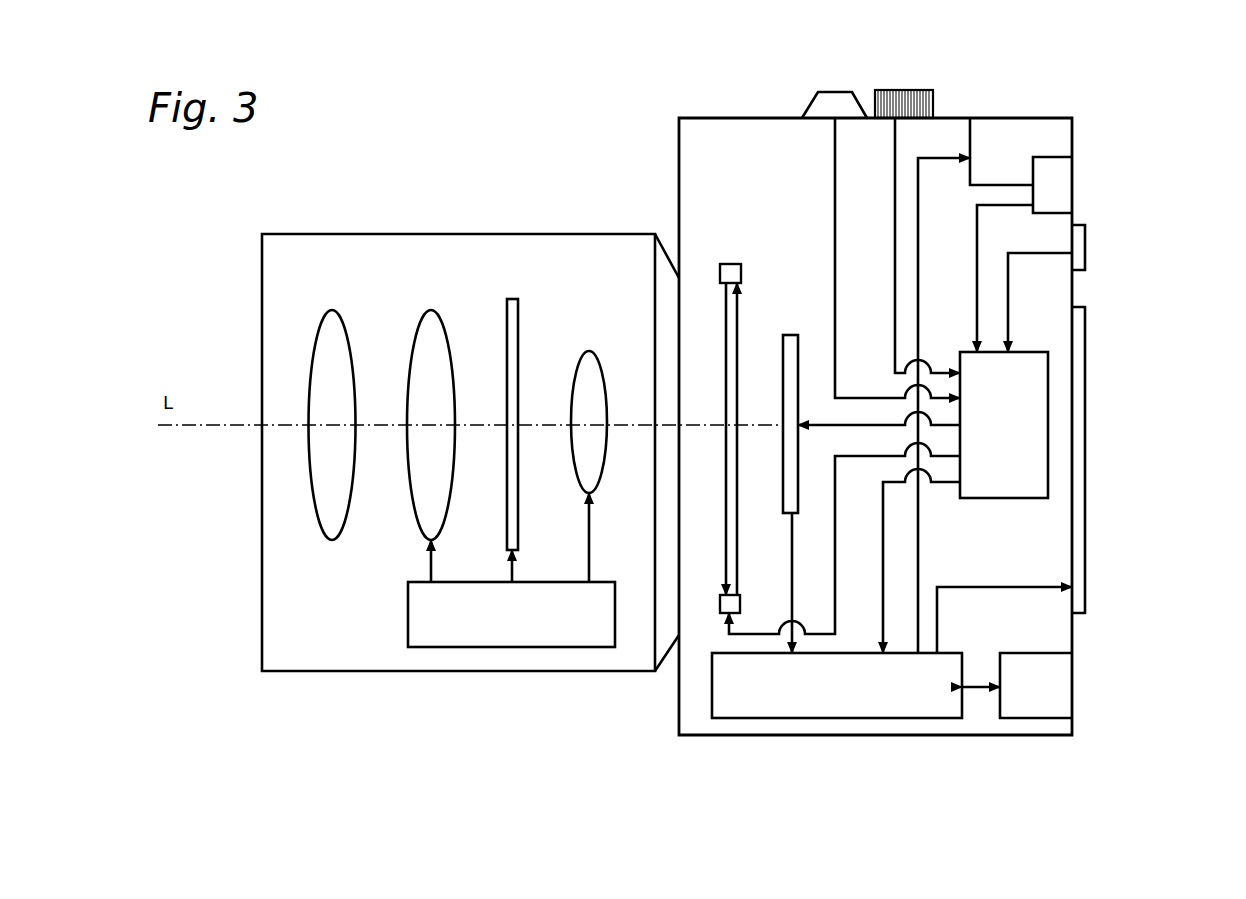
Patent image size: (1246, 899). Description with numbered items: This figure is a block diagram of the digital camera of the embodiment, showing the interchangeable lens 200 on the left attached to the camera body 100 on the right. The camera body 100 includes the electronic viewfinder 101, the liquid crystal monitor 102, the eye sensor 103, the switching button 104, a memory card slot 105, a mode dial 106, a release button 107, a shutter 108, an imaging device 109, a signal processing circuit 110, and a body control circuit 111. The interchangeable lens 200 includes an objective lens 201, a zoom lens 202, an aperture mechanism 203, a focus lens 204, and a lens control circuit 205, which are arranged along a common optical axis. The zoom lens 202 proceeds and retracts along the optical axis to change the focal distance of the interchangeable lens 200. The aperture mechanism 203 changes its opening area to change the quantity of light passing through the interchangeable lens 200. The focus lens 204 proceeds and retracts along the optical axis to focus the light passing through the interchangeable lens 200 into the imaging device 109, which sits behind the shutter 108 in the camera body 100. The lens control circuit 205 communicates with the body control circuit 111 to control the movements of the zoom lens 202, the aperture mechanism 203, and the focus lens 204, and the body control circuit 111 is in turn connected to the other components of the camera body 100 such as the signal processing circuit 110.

The camera body 100 is at (1072, 628).
The electronic viewfinder 101 is at (1012, 137).
The liquid crystal monitor 102 is at (1085, 518).
The eye sensor 103 is at (1057, 190).
The switching button 104 is at (1085, 255).
The memory card slot 105 is at (1035, 700).
The mode dial 106 is at (910, 87).
The release button 107 is at (810, 113).
The shutter 108 is at (733, 264).
The imaging device 109 is at (790, 335).
The signal processing circuit 110 is at (836, 707).
The body control circuit 111 is at (1028, 417).
The interchangeable lens 200 is at (262, 612).
The objective lens 201 is at (327, 309).
The zoom lens 202 is at (427, 309).
The aperture mechanism 203 is at (508, 299).
The focus lens 204 is at (586, 352).
The lens control circuit 205 is at (517, 613).